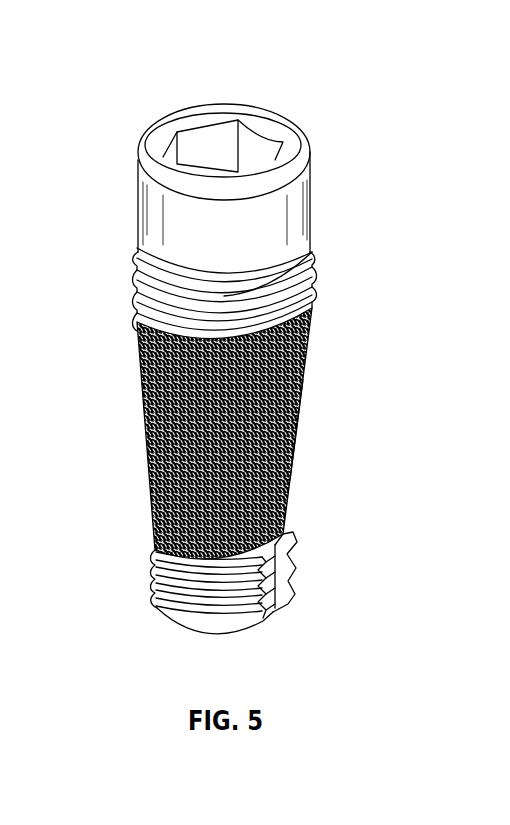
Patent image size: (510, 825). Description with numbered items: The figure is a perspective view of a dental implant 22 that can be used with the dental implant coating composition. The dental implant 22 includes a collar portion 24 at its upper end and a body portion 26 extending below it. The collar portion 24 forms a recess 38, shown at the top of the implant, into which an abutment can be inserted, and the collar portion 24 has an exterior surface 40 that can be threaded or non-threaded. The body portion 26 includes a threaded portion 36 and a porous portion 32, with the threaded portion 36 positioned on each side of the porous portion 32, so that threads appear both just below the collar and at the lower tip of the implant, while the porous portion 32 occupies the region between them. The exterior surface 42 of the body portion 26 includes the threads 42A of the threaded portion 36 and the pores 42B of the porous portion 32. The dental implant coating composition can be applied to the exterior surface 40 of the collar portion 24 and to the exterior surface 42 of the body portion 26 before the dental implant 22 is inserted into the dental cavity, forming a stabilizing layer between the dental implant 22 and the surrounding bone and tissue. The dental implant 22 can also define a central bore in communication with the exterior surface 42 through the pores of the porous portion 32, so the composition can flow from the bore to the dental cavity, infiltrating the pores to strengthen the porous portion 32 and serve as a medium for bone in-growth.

The dental implant 22 is at (130, 50).
The collar portion 24 is at (123, 113).
The body portion 26 is at (123, 233).
The porous portion 32 is at (295, 490).
The threaded portion 36 is at (313, 266).
The recess 38 is at (213, 148).
The exterior surface of the collar portion 40 is at (300, 212).
The exterior surface of the body portion 42 is at (325, 364).
The threads 42A is at (310, 252).
The pores 42B is at (302, 412).